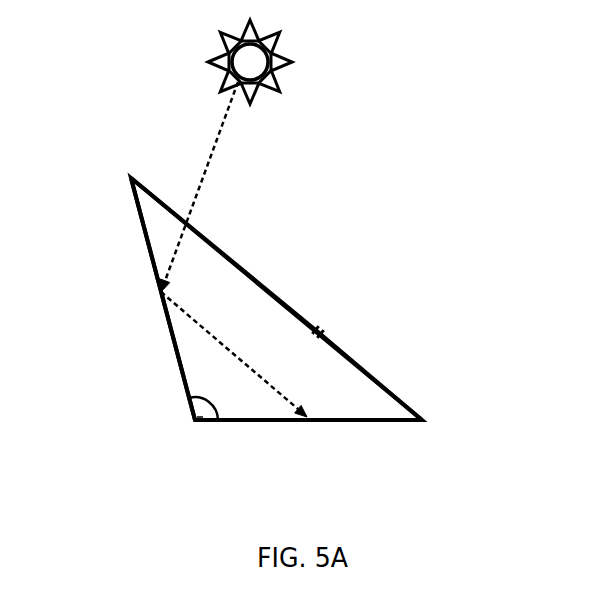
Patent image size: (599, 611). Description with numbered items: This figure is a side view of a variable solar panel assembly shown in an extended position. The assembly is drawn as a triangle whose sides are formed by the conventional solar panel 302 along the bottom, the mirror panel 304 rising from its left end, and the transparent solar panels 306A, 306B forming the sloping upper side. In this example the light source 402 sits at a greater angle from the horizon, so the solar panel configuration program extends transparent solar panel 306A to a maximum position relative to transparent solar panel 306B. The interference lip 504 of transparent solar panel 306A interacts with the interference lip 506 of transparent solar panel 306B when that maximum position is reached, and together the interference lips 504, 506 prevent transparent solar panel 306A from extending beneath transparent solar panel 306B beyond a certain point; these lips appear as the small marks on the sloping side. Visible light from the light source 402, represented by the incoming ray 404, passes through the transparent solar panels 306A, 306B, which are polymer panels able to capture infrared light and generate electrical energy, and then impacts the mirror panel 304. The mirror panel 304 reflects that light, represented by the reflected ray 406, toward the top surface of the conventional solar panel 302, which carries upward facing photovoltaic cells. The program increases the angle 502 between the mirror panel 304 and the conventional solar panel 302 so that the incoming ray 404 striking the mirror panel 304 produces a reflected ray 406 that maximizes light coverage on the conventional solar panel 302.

The light source 402 is at (273, 80).
The incoming ray 404 is at (205, 177).
The reflected ray 406 is at (247, 367).
The mirror panel 304 is at (150, 258).
The conventional solar panel 302 is at (238, 422).
The transparent solar panel 306A is at (262, 288).
The transparent solar panel 306B is at (407, 402).
The interference lip 506 is at (318, 327).
The interference lip 504 is at (318, 340).
The angle 502 is at (197, 415).